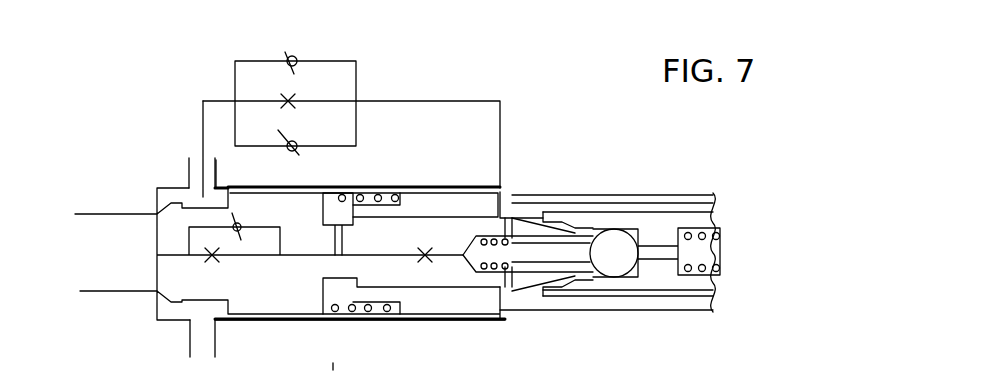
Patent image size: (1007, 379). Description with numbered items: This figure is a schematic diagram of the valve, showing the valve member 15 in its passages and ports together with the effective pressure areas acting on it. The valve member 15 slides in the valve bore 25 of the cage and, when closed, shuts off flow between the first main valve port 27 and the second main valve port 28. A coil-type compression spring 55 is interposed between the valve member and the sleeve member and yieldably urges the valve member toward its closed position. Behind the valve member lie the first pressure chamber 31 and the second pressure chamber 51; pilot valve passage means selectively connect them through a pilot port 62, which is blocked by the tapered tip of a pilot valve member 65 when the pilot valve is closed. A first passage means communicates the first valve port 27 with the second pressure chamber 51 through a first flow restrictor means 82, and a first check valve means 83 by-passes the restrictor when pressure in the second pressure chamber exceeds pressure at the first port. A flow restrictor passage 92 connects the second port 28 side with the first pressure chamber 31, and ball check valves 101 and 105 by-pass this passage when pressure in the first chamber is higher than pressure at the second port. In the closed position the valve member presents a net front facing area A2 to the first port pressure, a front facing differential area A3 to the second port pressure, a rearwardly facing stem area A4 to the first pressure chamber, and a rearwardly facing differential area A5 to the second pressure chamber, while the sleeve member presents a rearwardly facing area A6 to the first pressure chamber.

The valve member 15 is at (280, 300).
The valve bore 25 is at (276, 196).
The first main valve port 27 is at (157, 291).
The second main valve port 28 is at (184, 186).
The first pressure chamber 31 is at (508, 213).
The second pressure chamber 51 is at (342, 212).
The coil-type compression spring 55 is at (352, 312).
The pilot port 62 is at (425, 253).
The pilot valve member 65 is at (582, 255).
The first flow restrictor means 82 is at (210, 258).
The first check valve means 83 is at (238, 232).
The flow restrictor passage 92 is at (289, 100).
The check valve 101 is at (288, 57).
The second check valve 105 is at (292, 147).
The net front facing area A2 is at (155, 225).
The net front facing differential area A3 is at (218, 187).
The net rearwardly facing stem area A4 is at (565, 222).
The net rearwardly facing differential area A5 is at (332, 200).
The net rearwardly facing sleeve area A6 is at (503, 212).